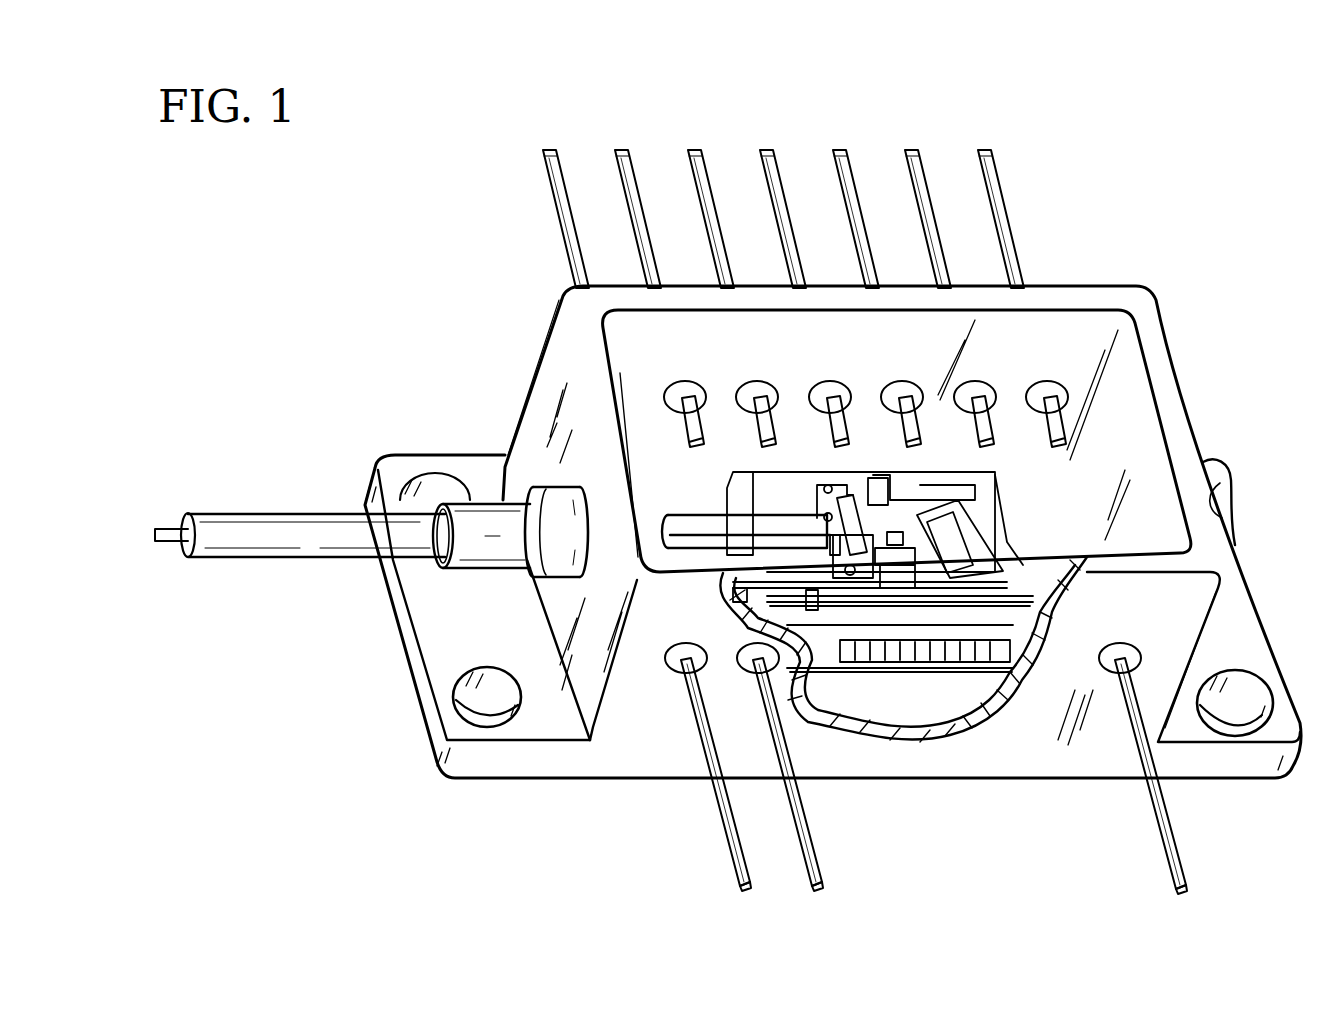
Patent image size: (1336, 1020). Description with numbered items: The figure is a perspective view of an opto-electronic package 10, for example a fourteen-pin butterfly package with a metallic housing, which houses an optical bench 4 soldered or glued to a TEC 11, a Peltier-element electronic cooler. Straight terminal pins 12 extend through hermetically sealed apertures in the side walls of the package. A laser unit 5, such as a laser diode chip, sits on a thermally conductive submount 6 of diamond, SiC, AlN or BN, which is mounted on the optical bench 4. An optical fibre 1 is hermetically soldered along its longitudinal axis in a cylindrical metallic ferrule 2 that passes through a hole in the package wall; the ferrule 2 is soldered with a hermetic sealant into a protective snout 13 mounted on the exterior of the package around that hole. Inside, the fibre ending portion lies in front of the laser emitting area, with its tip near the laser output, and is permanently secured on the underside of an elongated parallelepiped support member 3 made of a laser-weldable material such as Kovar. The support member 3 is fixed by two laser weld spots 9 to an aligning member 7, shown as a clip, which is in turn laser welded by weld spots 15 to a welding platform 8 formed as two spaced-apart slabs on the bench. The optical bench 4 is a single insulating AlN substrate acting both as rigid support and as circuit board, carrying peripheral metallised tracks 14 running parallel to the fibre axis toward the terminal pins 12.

The optical fibre 1 is at (163, 543).
The ferrule 2 is at (265, 523).
The support member 3 is at (683, 522).
The optical bench 4 is at (993, 617).
The laser unit 5 is at (915, 537).
The submount 6 is at (903, 540).
The aligning member 7 is at (855, 527).
The welding platform 8 is at (785, 563).
The laser weld spots 9 is at (824, 488).
The package 10 is at (528, 368).
The TEC 11 is at (903, 653).
The terminal pins 12 is at (993, 165).
The protective snout 13 is at (497, 493).
The metallised tracks 14 is at (810, 597).
The weld spots 15 is at (826, 515).